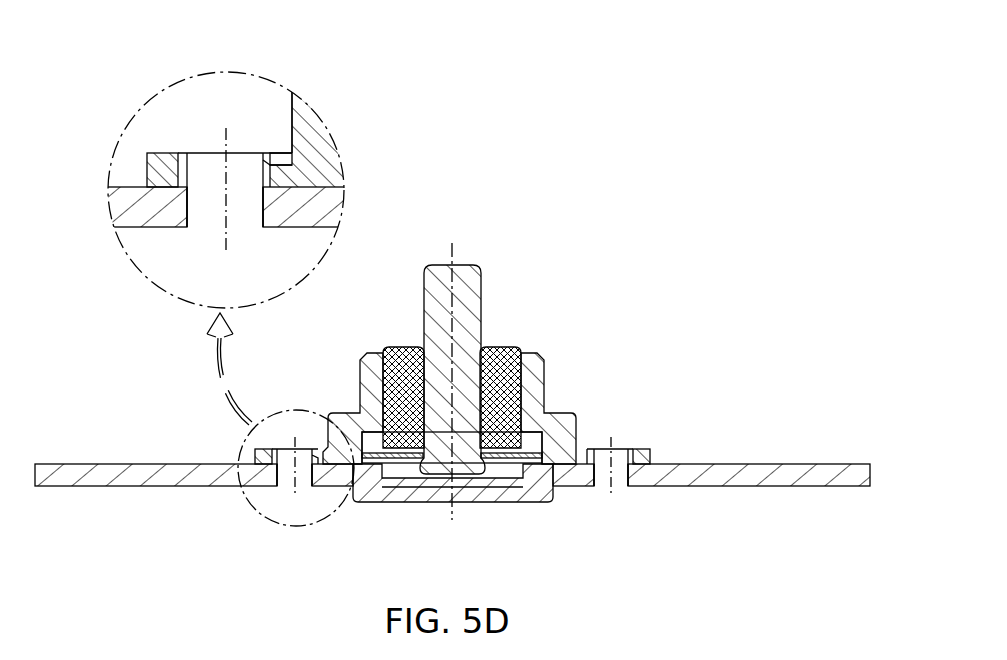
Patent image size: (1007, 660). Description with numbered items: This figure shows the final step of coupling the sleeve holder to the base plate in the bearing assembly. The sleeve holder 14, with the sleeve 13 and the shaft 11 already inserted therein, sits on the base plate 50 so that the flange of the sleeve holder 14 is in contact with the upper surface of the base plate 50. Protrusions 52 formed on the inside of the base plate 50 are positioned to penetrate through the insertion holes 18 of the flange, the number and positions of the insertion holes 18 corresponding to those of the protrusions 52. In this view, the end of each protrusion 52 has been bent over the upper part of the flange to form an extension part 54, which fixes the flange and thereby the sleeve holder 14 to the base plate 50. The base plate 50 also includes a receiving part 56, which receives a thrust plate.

The shaft 11 is at (462, 267).
The sleeve 13 is at (507, 350).
The sleeve holder 14 is at (559, 417).
The insertion hole 18 is at (592, 465).
The base plate 50 is at (184, 487).
The protrusion 52 is at (619, 465).
The extension part 54 is at (627, 447).
The receiving part 56 is at (404, 480).